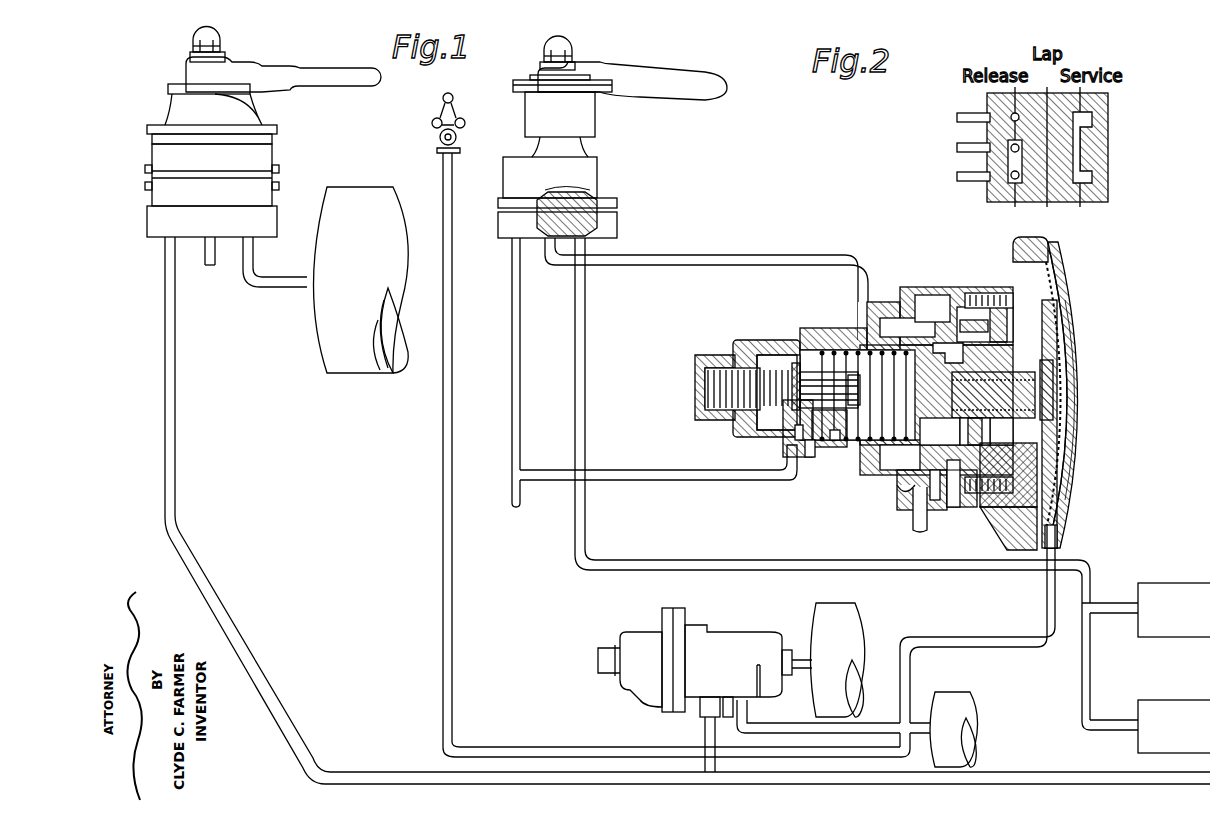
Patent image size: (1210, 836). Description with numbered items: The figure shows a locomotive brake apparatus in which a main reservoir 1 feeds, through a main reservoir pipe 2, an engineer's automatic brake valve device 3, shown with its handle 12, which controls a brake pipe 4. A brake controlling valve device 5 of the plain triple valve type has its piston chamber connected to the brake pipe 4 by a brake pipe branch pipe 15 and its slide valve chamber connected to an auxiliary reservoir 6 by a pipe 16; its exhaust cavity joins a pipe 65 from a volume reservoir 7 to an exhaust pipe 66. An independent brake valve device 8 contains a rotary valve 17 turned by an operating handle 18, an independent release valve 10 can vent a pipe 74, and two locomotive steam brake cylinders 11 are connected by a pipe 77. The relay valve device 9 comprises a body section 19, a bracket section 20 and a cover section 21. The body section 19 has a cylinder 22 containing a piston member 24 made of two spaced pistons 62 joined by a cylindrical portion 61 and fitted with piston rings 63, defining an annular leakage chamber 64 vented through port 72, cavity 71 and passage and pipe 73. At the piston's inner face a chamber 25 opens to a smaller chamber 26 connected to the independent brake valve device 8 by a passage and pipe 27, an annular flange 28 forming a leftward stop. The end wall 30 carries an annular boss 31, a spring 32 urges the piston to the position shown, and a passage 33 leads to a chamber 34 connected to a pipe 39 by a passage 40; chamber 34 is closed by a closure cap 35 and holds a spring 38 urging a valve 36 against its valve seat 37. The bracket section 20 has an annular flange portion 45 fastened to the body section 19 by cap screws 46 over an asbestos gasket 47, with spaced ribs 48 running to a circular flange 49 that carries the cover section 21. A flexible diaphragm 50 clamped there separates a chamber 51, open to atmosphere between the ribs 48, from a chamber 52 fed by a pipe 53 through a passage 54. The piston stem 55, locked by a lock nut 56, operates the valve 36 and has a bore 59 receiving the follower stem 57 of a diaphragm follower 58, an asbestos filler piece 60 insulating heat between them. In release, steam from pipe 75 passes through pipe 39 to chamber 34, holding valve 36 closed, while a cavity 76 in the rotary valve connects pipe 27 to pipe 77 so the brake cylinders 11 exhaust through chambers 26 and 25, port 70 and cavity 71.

In FIG. 1, the main reservoir 1 is at (366, 186).
In FIG. 1, the main reservoir pipe 2 is at (270, 281).
In FIG. 1, the engineer's automatic brake valve device 3 is at (280, 153).
In FIG. 1, the brake pipe 4 is at (177, 513).
In FIG. 1, the brake controlling valve device 5 is at (687, 611).
In FIG. 1, the auxiliary reservoir 6 is at (858, 642).
In FIG. 1, the volume reservoir 7 is at (968, 708).
In FIG. 1, the independent brake valve device 8 is at (602, 166).
In FIG. 1, the relay valve device 9 is at (1078, 270).
In FIG. 1, the independent release valve 10 is at (460, 116).
In FIG. 1, the locomotive steam brake cylinders 11 is at (1182, 576).
In FIG. 1, the handle 12 is at (358, 81).
In FIG. 1, the brake pipe branch pipe 15 is at (705, 734).
In FIG. 1, the pipe 16 is at (800, 658).
In FIG. 1, the rotary valve 17 is at (560, 191).
In FIG. 1, the operating handle 18 is at (672, 93).
In FIG. 1, the body section 19 is at (916, 283).
In FIG. 1, the bracket section 20 is at (1010, 243).
In FIG. 2, the bracket section 20 is at (1015, 148).
In FIG. 1, the cover section 21 is at (1084, 368).
In FIG. 1, the cylinder 22 is at (958, 316).
In FIG. 1, the piston member 24 is at (1007, 331).
In FIG. 1, the chamber 25 is at (896, 318).
In FIG. 1, the chamber 26 is at (840, 352).
In FIG. 1, the passage and pipe 27 is at (858, 293).
In FIG. 2, the passage and pipe 27 is at (957, 148).
In FIG. 1, the annular flange 28 is at (883, 467).
In FIG. 1, the end wall 30 is at (808, 372).
In FIG. 1, the annular boss 31 is at (810, 432).
In FIG. 1, the spring 32 is at (838, 433).
In FIG. 1, the passage 33 is at (808, 435).
In FIG. 1, the chamber 34 is at (780, 358).
In FIG. 1, the closure cap 35 is at (700, 356).
In FIG. 1, the valve 36 is at (797, 363).
In FIG. 1, the valve seat 37 is at (780, 428).
In FIG. 1, the spring 38 is at (712, 428).
In FIG. 1, the pipe 39 is at (748, 481).
In FIG. 1, the passage 40 is at (796, 428).
In FIG. 1, the annular flange portion 45 is at (1018, 463).
In FIG. 1, the cap screws 46 is at (1030, 291).
In FIG. 1, the asbestos gasket 47 is at (960, 490).
In FIG. 1, the spaced ribs 48 is at (1007, 528).
In FIG. 1, the circular flange 49 is at (1042, 262).
In FIG. 2, the circular flange 49 is at (1082, 147).
In FIG. 1, the flexible diaphragm 50 is at (1063, 308).
In FIG. 1, the chamber 51 is at (1058, 299).
In FIG. 1, the chamber 52 is at (1066, 328).
In FIG. 1, the pipe 53 is at (1047, 616).
In FIG. 1, the passage 54 is at (1057, 531).
In FIG. 1, the piston stem 55 is at (930, 387).
In FIG. 1, the lock nut 56 is at (895, 445).
In FIG. 1, the follower stem 57 is at (997, 392).
In FIG. 1, the diaphragm follower 58 is at (1054, 393).
In FIG. 1, the bore 59 is at (933, 420).
In FIG. 1, the asbestos filler piece 60 is at (1013, 420).
In FIG. 1, the cylindrical portion 61 is at (948, 310).
In FIG. 1, the pistons 62 is at (972, 420).
In FIG. 1, the piston rings 63 is at (890, 312).
In FIG. 1, the annular leakage chamber 64 is at (950, 478).
In FIG. 1, the pipe 65 is at (884, 730).
In FIG. 1, the exhaust pipe 66 is at (746, 706).
In FIG. 1, the port 70 is at (866, 478).
In FIG. 1, the cavity 71 is at (930, 480).
In FIG. 1, the port 72 is at (950, 495).
In FIG. 1, the passage and pipe 73 is at (912, 515).
In FIG. 1, the pipe 74 is at (453, 569).
In FIG. 1, the pipe 75 is at (520, 385).
In FIG. 2, the pipe 75 is at (957, 118).
In FIG. 1, the cavity 76 is at (568, 206).
In FIG. 1, the pipe 77 is at (585, 331).
In FIG. 2, the pipe 77 is at (957, 177).